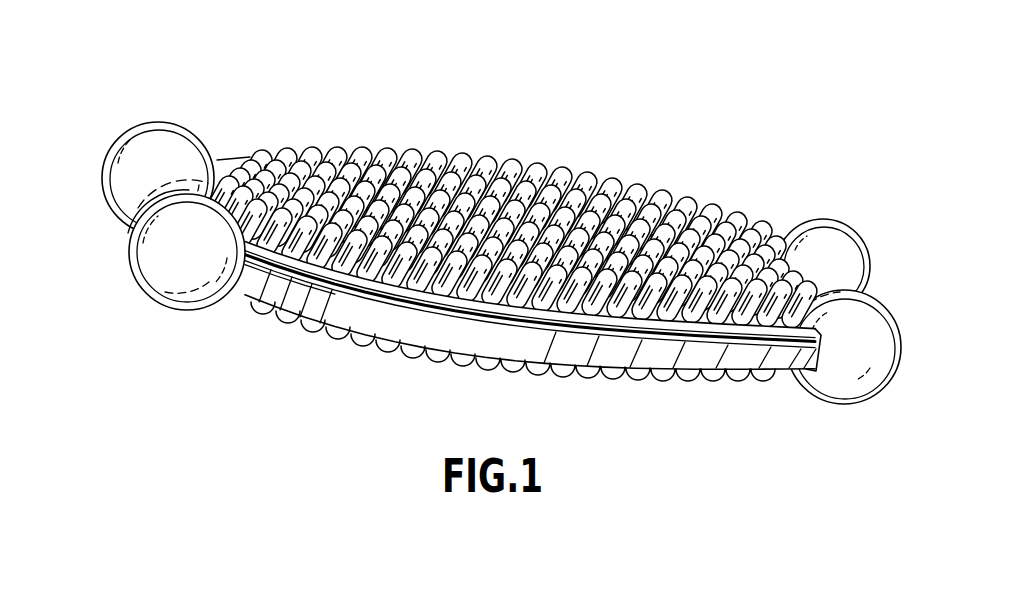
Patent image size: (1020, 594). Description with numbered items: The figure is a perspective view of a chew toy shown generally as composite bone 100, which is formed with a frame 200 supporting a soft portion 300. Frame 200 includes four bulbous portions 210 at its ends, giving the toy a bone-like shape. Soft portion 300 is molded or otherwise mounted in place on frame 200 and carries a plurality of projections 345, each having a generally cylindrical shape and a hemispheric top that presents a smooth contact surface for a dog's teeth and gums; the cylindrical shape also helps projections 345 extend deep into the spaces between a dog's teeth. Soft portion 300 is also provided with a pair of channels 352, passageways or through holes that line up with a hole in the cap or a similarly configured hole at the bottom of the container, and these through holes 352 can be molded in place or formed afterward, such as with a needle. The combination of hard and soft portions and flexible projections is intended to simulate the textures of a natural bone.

The composite bone 100 is at (501, 248).
The frame 200 is at (690, 368).
The bulbous portions 210 is at (823, 237).
The soft portion 300 is at (510, 190).
The projections 345 is at (664, 192).
The channels 352 is at (354, 165).